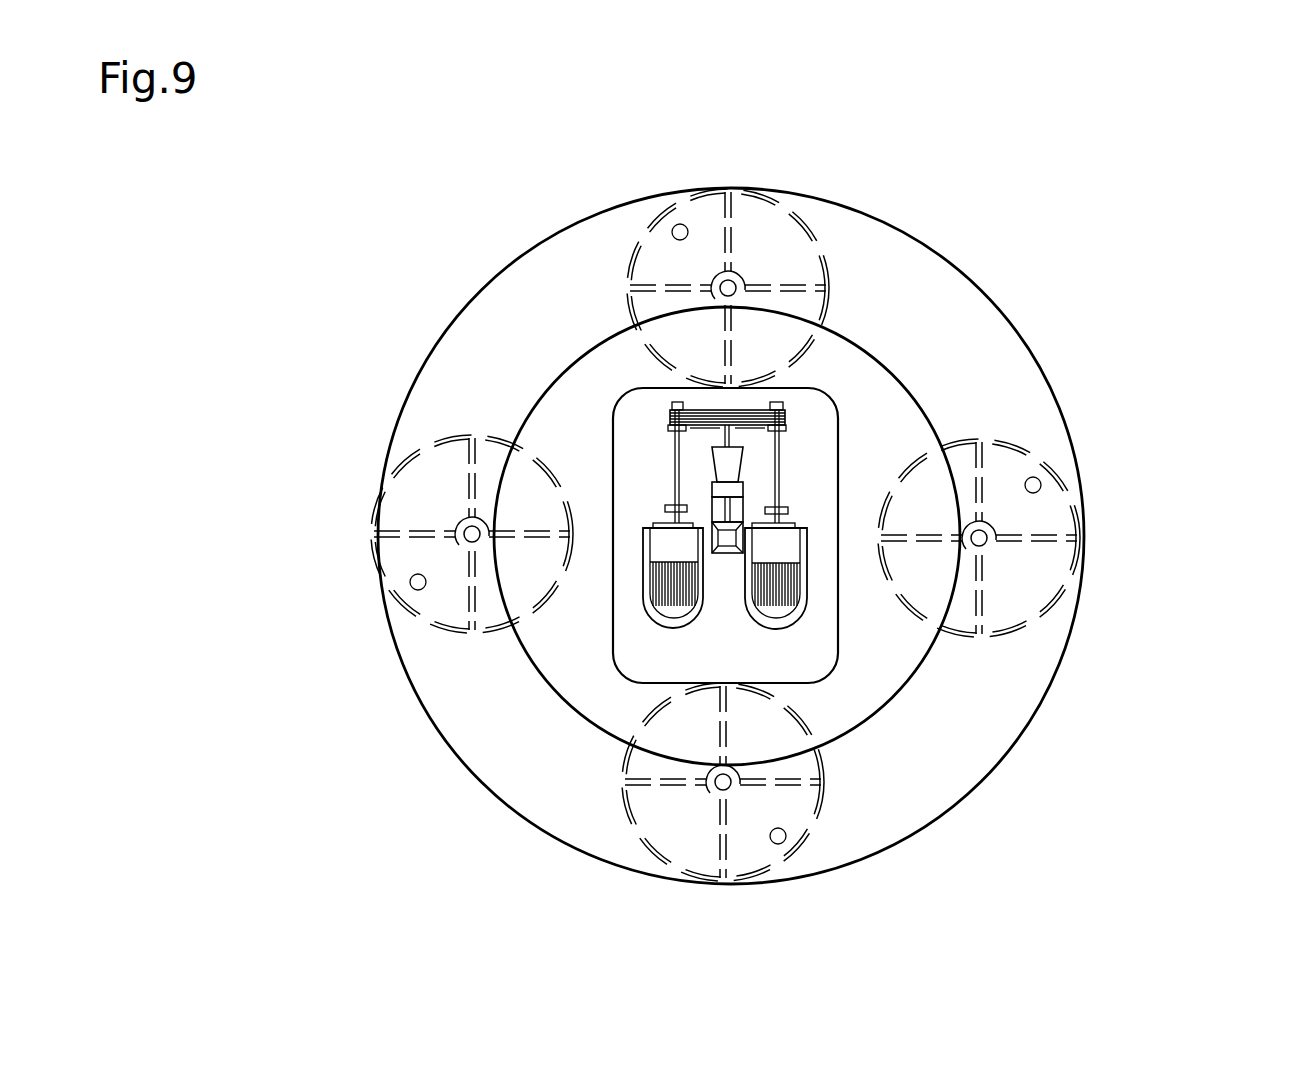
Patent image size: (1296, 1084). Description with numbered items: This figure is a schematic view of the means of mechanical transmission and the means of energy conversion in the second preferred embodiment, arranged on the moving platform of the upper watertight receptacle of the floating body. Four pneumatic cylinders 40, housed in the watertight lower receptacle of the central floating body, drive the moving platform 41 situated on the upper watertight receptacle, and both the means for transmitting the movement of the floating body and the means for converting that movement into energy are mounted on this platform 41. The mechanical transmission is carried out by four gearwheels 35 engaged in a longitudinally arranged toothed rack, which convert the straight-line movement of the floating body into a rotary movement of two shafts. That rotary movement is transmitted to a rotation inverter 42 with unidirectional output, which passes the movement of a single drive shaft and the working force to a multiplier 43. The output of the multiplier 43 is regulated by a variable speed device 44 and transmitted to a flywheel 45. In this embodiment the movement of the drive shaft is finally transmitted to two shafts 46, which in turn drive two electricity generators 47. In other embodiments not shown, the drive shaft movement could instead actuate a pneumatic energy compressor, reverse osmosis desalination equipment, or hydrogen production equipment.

The gearwheel 35 is at (715, 538).
The pneumatic cylinder 40 is at (783, 262).
The moving platform 41 is at (785, 658).
The rotation inverter 42 is at (718, 510).
The multiplier 43 is at (720, 488).
The variable speed device 44 is at (732, 455).
The flywheel 45 is at (738, 423).
The shaft 46 is at (673, 465).
The electricity generator 47 is at (673, 592).